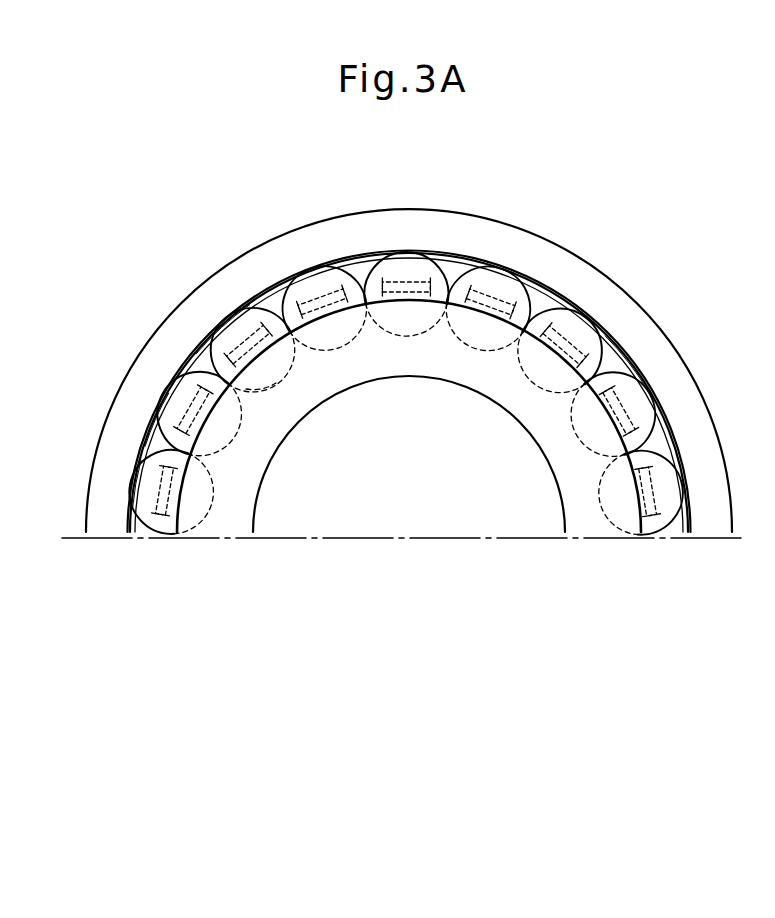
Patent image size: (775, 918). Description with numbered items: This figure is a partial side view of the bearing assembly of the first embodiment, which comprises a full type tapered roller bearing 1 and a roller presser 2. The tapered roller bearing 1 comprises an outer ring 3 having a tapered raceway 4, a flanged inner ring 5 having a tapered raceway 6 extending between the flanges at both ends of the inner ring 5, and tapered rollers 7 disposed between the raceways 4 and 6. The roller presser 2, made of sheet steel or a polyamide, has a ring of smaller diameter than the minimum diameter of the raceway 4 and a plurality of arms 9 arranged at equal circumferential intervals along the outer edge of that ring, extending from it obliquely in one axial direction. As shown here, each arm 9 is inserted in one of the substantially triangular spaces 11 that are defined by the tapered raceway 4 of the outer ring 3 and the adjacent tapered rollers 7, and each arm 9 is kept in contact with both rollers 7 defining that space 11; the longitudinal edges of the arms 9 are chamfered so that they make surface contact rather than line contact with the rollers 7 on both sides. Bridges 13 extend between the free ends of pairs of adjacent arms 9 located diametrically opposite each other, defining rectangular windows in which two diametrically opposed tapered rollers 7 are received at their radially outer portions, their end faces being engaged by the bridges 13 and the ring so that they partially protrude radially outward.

The tapered roller bearing 1 is at (530, 225).
The roller presser 2 is at (272, 290).
The outer ring 3 is at (587, 290).
The tapered raceway 4 is at (630, 363).
The flanged inner ring 5 is at (568, 475).
The tapered raceway 6 is at (258, 392).
The tapered rollers 7 is at (323, 292).
The arms 9 is at (148, 440).
The spaces 11 is at (155, 420).
The bridges 13 is at (233, 318).